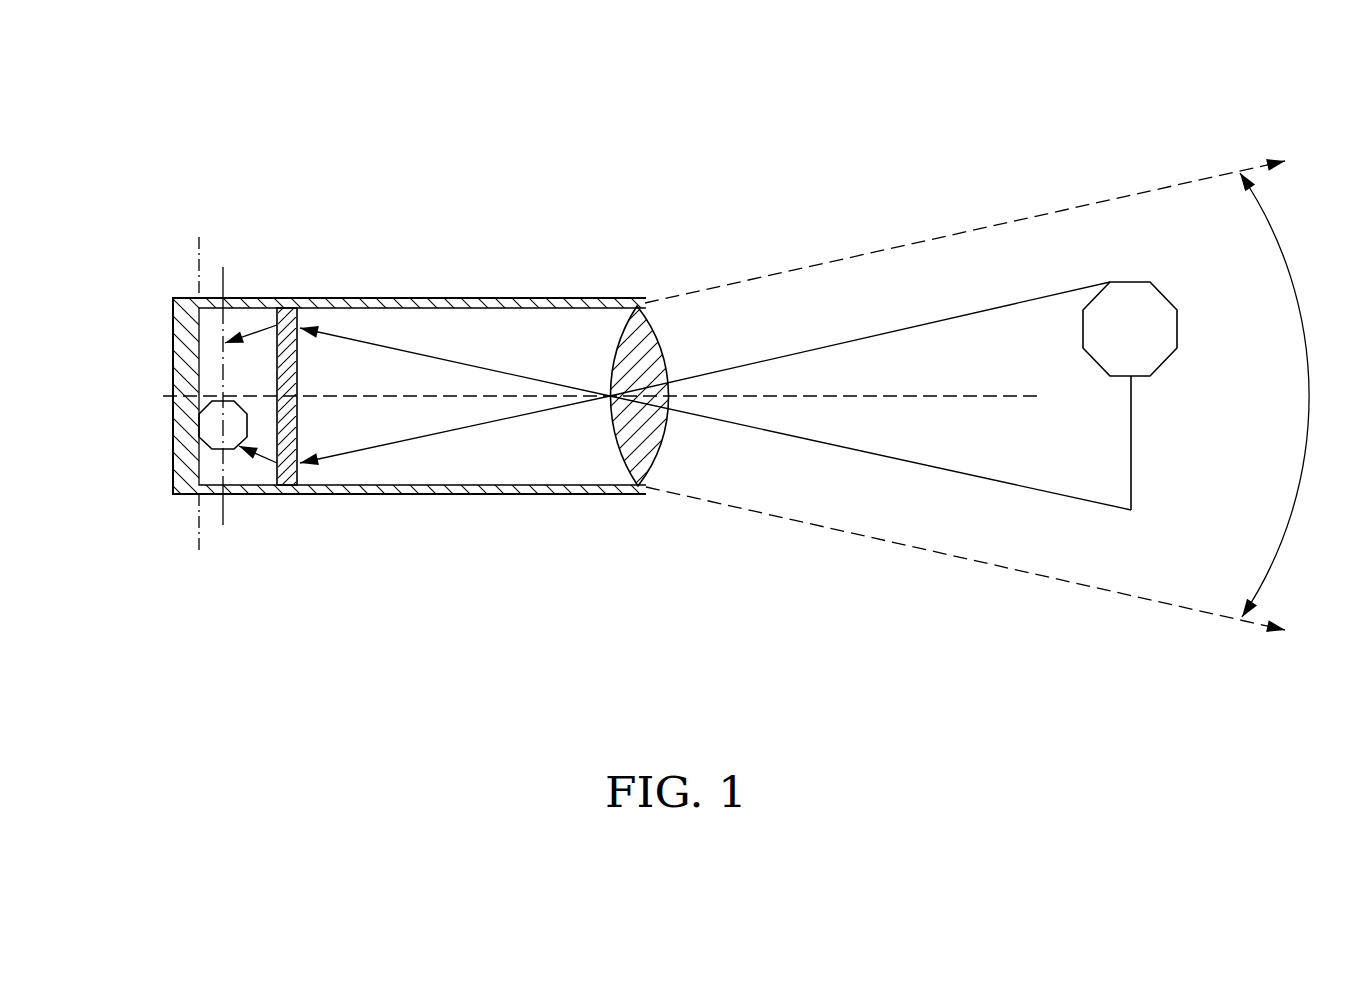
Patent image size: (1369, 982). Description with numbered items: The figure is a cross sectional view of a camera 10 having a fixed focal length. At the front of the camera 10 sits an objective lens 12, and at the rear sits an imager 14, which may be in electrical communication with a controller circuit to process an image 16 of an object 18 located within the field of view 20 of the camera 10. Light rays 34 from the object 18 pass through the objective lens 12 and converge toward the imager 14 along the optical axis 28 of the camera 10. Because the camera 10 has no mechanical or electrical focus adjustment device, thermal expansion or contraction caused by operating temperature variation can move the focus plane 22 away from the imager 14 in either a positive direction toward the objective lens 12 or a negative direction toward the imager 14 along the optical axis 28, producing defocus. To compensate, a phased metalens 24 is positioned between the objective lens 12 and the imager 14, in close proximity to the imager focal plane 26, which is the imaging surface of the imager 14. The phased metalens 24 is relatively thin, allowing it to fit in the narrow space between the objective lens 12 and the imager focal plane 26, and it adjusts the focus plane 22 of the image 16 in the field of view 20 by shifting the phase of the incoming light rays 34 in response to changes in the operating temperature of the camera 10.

The camera 10 is at (167, 170).
The objective lens 12 is at (622, 318).
The imager 14 is at (176, 437).
The image 16 is at (228, 449).
The object 18 is at (1136, 282).
The field of view 20 is at (1290, 527).
The focus plane 22 is at (223, 278).
The phased metalens 24 is at (293, 298).
The imager focal plane 26 is at (199, 547).
The optical axis 28 is at (763, 397).
The light rays 34 is at (853, 337).